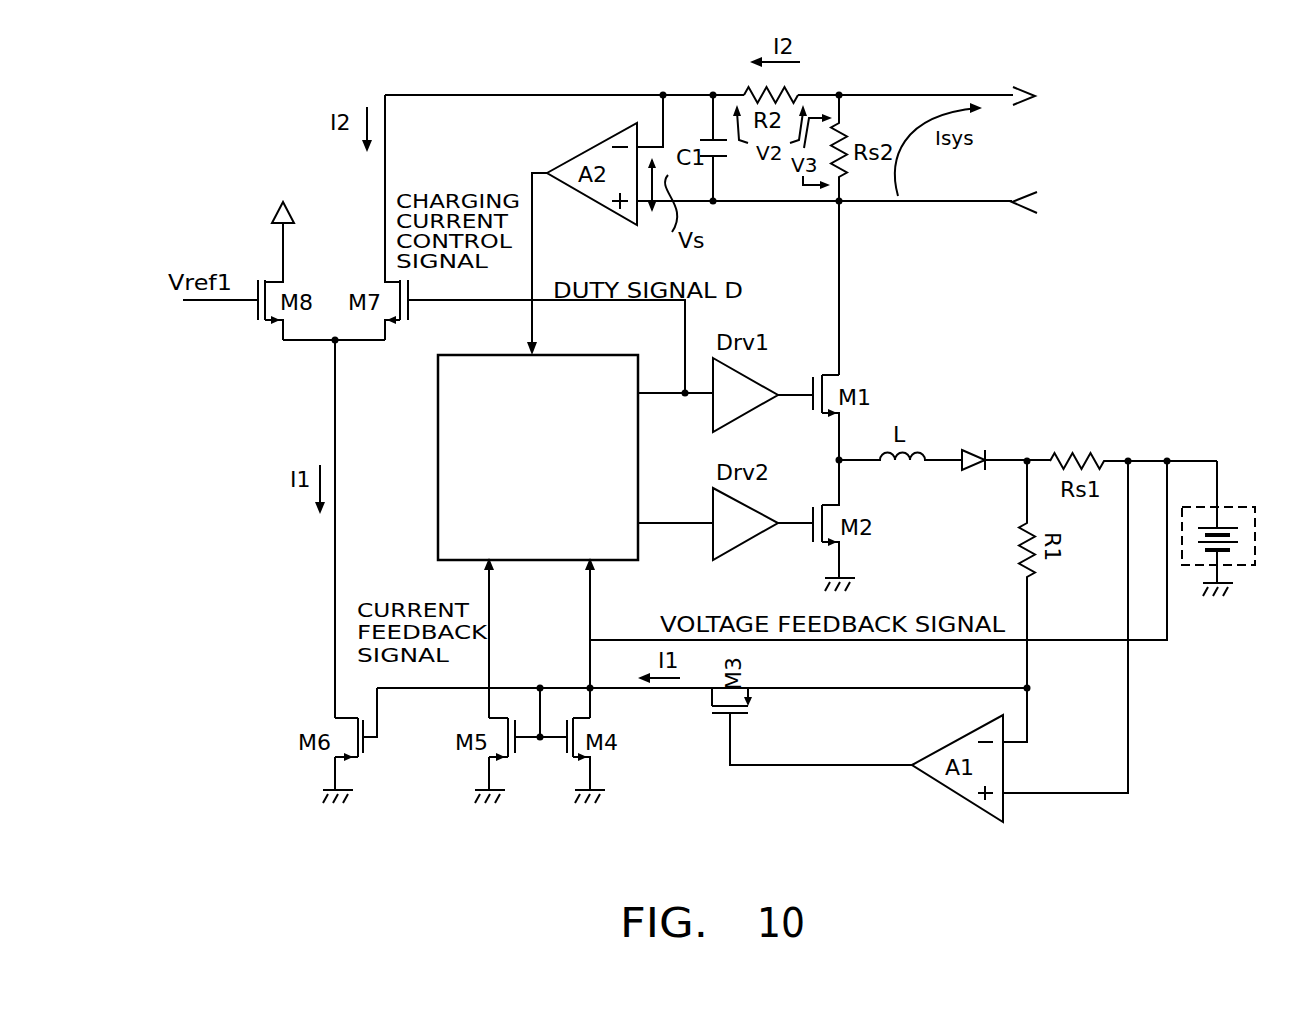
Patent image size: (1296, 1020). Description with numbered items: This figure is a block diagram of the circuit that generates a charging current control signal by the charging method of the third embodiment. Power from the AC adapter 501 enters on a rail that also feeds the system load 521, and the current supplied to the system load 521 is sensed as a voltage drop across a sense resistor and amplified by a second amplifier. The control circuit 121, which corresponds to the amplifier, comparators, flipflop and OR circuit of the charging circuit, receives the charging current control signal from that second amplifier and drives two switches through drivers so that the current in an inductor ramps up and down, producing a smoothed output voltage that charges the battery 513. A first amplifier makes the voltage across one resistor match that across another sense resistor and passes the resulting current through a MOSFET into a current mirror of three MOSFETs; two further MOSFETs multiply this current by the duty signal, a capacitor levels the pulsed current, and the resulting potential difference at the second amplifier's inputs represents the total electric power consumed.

The system load 521 is at (1157, 102).
The AC adapter 501 is at (1156, 207).
The control circuit 121 is at (438, 467).
The battery 513 is at (1250, 507).